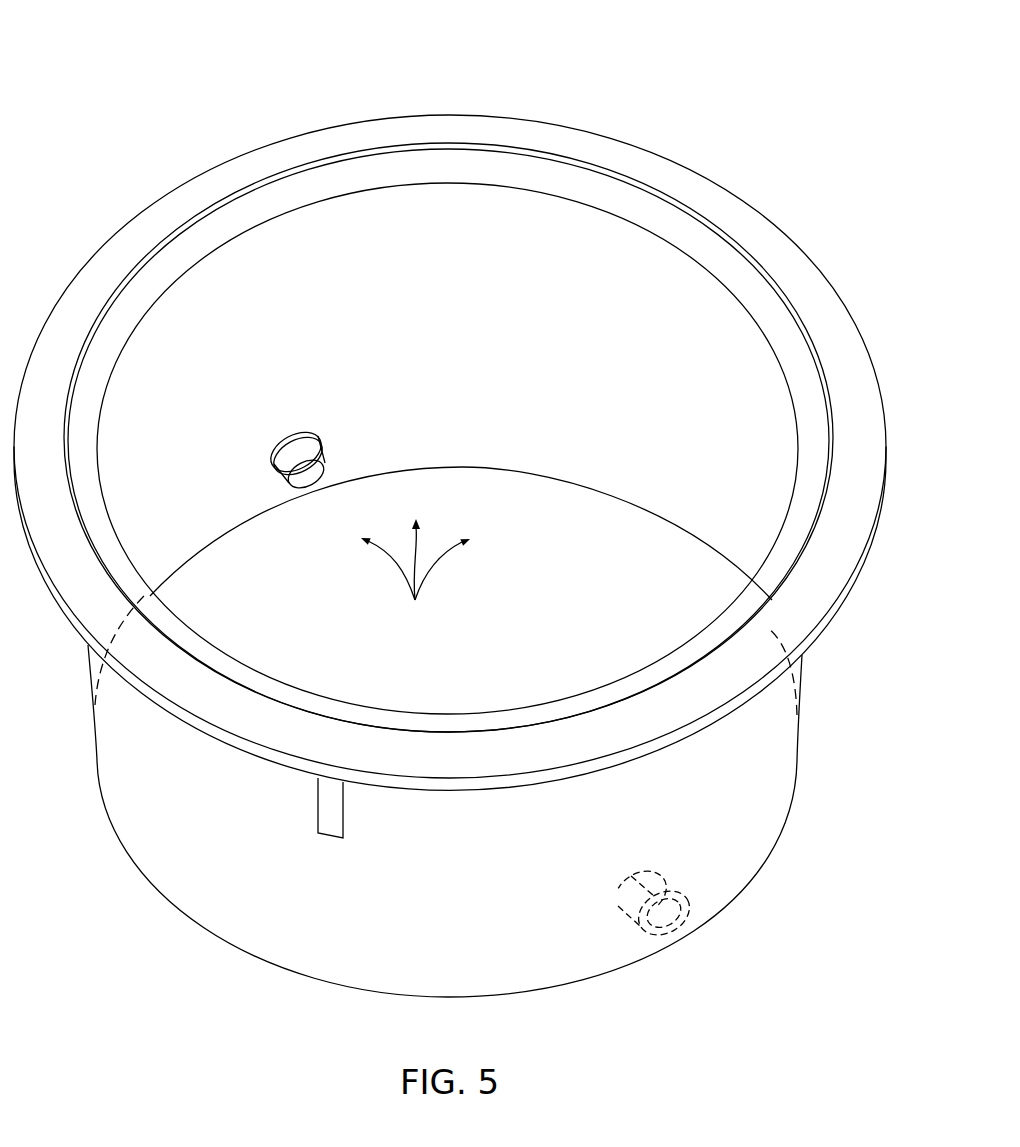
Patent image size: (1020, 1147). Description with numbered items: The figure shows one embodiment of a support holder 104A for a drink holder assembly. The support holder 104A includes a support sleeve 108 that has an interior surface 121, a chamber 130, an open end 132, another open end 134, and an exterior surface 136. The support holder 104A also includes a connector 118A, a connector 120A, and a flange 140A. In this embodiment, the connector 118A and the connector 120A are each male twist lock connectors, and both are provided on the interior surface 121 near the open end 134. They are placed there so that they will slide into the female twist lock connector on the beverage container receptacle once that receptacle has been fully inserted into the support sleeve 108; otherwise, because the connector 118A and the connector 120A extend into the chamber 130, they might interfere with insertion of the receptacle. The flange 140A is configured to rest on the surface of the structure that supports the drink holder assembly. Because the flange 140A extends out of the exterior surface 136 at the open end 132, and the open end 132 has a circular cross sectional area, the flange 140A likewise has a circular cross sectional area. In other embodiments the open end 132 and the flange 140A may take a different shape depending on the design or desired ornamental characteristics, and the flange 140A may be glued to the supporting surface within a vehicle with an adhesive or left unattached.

The support holder 104A is at (776, 78).
The open end 132 is at (485, 220).
The flange 140A is at (791, 271).
The interior surface 121 is at (632, 375).
The connector 118A is at (306, 470).
The open end 134 is at (601, 632).
The chamber 130 is at (415, 579).
The support sleeve 108 is at (780, 753).
The connector 120A is at (658, 887).
The exterior surface 136 is at (176, 857).